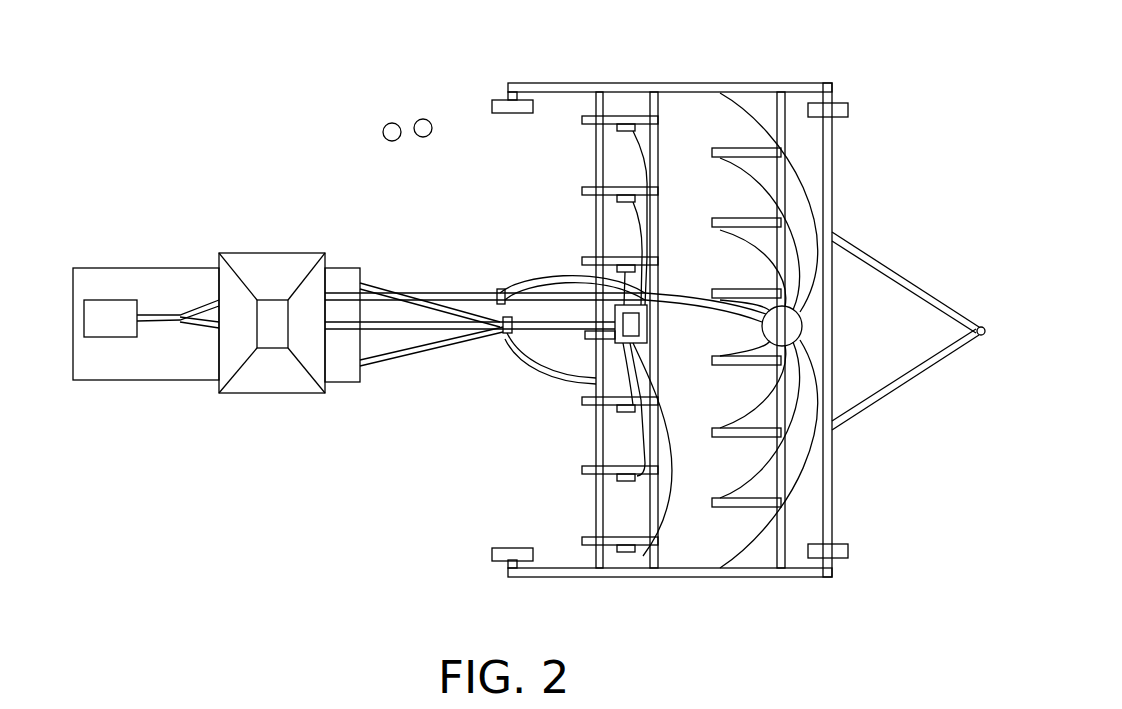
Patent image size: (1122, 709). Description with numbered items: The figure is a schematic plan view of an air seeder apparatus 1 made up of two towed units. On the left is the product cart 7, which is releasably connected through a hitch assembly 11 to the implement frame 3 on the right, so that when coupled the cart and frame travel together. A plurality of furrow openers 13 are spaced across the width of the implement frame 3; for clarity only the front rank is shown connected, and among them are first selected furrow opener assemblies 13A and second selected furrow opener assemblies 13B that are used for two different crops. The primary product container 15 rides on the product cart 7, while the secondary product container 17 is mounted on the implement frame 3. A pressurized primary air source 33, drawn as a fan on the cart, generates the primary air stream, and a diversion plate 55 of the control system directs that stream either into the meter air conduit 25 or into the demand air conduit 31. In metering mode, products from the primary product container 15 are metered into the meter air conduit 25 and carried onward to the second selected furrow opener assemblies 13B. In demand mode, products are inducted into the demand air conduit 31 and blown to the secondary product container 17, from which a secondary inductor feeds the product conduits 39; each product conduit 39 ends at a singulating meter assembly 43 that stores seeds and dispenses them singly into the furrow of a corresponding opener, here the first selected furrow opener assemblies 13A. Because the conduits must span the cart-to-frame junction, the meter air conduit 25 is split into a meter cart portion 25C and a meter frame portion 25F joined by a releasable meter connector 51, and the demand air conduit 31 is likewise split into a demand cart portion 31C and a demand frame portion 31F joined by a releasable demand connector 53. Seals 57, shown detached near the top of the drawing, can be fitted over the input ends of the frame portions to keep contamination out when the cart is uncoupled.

The apparatus 1 is at (915, 115).
The implement frame 3 is at (822, 83).
The product cart 7 is at (81, 381).
The hitch assembly 11 is at (471, 334).
The furrow openers 13 is at (729, 508).
The first selected furrow opener assemblies 13A is at (587, 115).
The second selected furrow opener assemblies 13B is at (737, 147).
The primary product container 15 is at (240, 395).
The secondary product container 17 is at (617, 343).
The meter air conduit 25 is at (199, 302).
The meter cart portion 25C is at (410, 285).
The meter frame portion 25F is at (573, 277).
The demand air conduit 31 is at (202, 328).
The demand cart portion 31C is at (400, 332).
The demand frame portion 31F is at (540, 367).
The pressurized primary air source 33 is at (96, 300).
The product conduits 39 is at (677, 545).
The singulating meter assembly 43 is at (625, 556).
The releasable meter connector 51 is at (500, 288).
The releasable demand connector 53 is at (505, 345).
The diversion plate 55 is at (182, 320).
The seals 57 is at (392, 122).